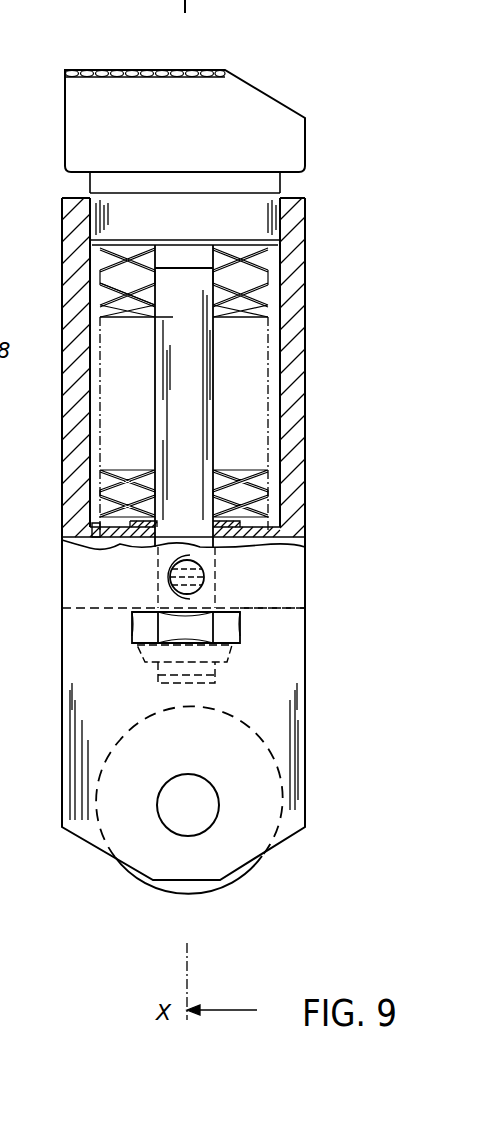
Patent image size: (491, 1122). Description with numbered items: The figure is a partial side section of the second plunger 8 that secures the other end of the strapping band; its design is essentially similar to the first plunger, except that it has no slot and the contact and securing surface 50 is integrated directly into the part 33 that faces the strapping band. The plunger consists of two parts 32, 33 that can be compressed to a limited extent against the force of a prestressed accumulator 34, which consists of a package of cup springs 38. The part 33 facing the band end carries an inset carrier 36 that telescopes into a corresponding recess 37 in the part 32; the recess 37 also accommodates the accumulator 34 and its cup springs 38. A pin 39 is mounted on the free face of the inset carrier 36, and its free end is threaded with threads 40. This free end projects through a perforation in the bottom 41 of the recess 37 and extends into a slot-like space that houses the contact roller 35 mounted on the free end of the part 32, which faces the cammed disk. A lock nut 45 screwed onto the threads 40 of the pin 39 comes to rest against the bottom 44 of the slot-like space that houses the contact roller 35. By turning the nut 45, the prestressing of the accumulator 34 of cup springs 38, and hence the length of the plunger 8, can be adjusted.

The second plunger 8 is at (62, 388).
The part of plunger 32 is at (86, 568).
The part of plunger 33 is at (79, 143).
The accumulator 34 is at (102, 262).
The contact roller 35 is at (174, 888).
The inset carrier 36 is at (100, 216).
The recess 37 is at (102, 487).
The cup springs 38 is at (113, 290).
The pin 39 is at (177, 385).
The threads 40 is at (158, 600).
The bottom of recess 41 is at (92, 530).
The bottom of slot-like space 44 is at (272, 608).
The lock nut 45 is at (146, 628).
The contact and securing surface 50 is at (105, 80).